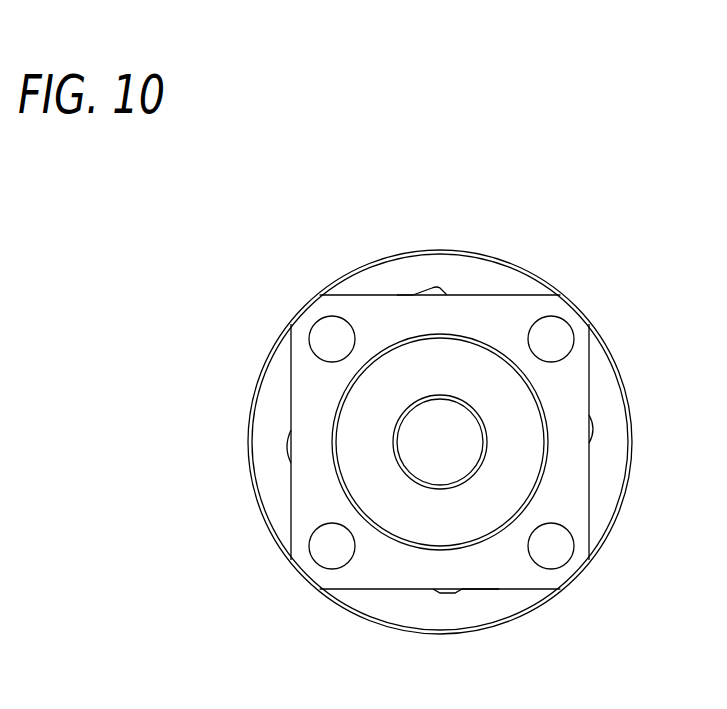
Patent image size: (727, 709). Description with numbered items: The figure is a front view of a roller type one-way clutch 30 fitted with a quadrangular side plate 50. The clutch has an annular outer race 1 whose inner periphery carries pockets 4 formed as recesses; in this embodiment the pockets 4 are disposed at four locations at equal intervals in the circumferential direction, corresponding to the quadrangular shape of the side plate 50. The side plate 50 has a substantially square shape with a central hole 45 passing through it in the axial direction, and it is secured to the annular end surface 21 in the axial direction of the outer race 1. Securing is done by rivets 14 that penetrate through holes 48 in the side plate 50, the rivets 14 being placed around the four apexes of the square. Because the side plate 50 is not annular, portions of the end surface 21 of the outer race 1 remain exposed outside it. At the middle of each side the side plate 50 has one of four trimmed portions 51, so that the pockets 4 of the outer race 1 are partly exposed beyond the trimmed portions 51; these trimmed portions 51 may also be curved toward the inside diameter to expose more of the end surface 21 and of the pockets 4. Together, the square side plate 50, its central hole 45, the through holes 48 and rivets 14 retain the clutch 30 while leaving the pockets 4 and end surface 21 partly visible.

The outer race 1 is at (383, 275).
The pockets 4 is at (435, 287).
The rivets 14 is at (323, 557).
The end surface 21 is at (607, 393).
The roller type one-way clutch 30 is at (586, 283).
The central hole 45 is at (428, 447).
The through holes 48 is at (574, 574).
The quadrangular side plate 50 is at (318, 311).
The trimmed portions 51 is at (397, 295).